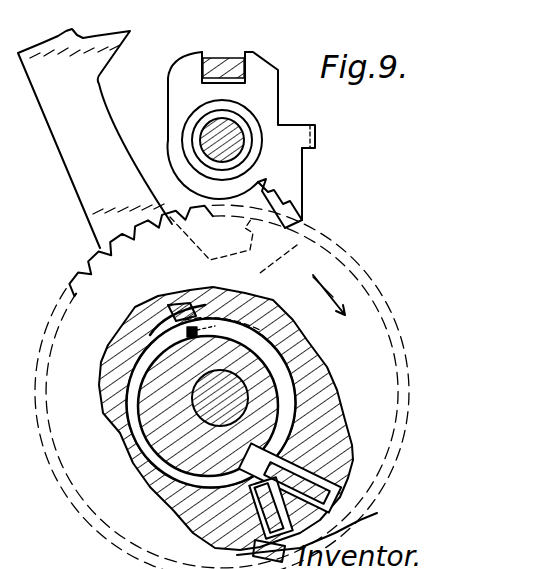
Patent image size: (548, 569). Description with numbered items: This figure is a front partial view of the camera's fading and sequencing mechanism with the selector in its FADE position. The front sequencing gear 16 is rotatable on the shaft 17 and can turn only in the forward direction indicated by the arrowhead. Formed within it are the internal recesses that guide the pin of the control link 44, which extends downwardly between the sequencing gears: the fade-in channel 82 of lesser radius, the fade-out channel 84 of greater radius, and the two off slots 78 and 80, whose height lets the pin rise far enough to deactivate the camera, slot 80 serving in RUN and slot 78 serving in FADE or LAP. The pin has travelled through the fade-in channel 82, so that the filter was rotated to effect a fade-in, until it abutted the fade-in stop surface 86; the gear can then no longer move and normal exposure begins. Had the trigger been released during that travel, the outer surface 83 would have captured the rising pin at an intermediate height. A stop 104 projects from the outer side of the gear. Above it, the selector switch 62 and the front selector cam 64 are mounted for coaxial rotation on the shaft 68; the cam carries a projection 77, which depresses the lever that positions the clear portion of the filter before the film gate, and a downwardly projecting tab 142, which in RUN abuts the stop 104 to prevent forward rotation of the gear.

The front sequencing gear 16 is at (370, 287).
The shaft 17 is at (278, 336).
The control link 44 is at (62, 148).
The selector switch 62 is at (222, 52).
The front selector cam 64 is at (278, 98).
The shaft 68 is at (208, 138).
The projection 77 is at (265, 200).
The off slot 78 is at (215, 533).
The off slot 80 is at (330, 452).
The fade-in channel 82 is at (283, 372).
The outer surface 83 is at (292, 381).
The fade-out channel 84 is at (140, 466).
The fade-in stop surface 86 is at (188, 310).
The stop 104 is at (262, 549).
The downwardly projecting tab 142 is at (302, 213).